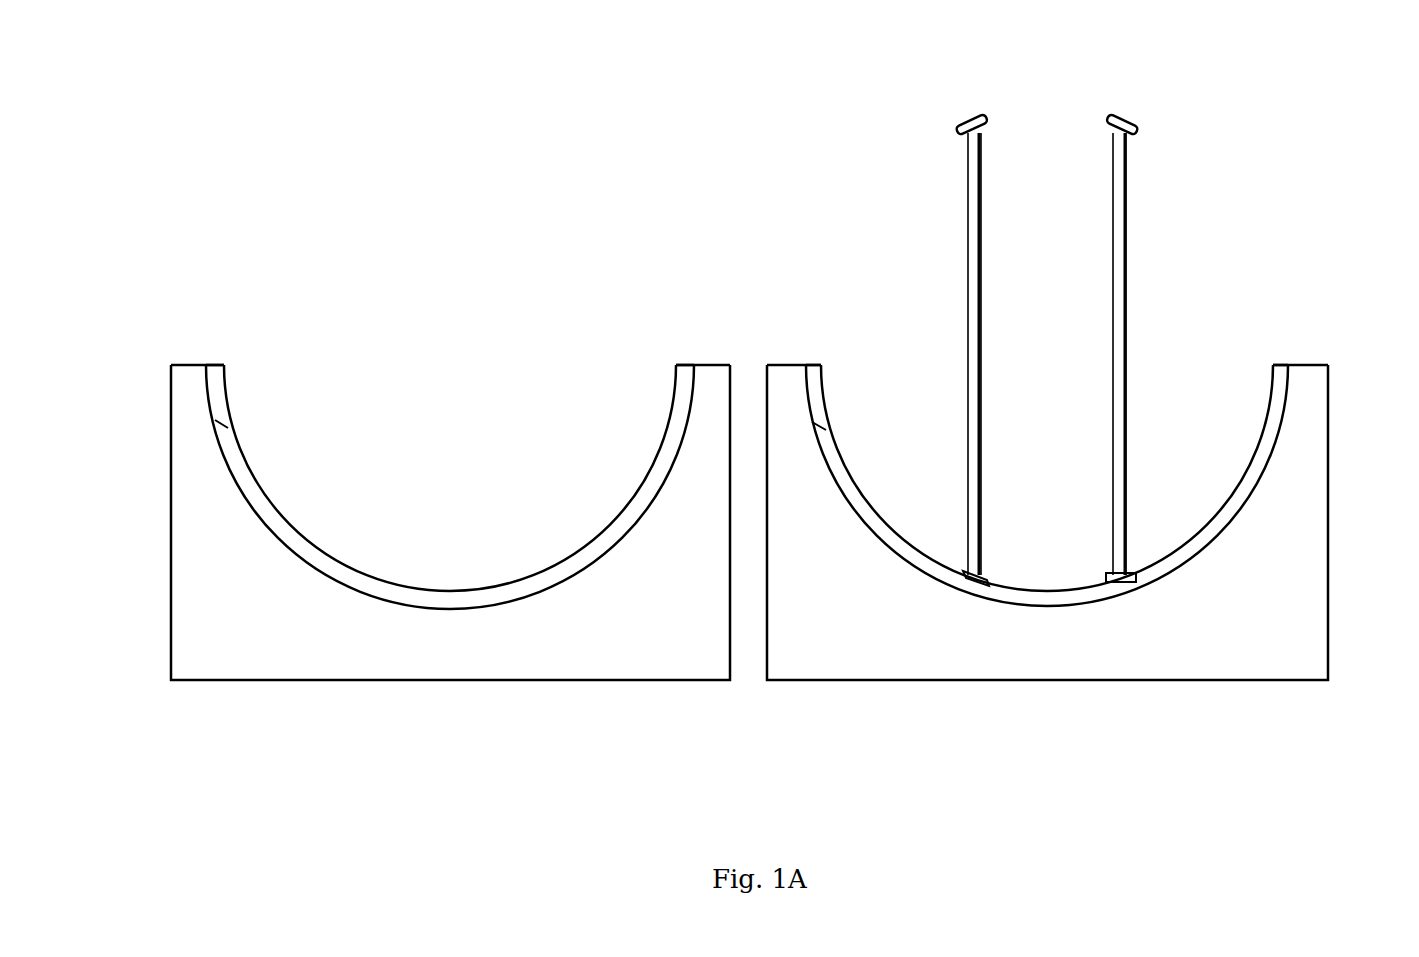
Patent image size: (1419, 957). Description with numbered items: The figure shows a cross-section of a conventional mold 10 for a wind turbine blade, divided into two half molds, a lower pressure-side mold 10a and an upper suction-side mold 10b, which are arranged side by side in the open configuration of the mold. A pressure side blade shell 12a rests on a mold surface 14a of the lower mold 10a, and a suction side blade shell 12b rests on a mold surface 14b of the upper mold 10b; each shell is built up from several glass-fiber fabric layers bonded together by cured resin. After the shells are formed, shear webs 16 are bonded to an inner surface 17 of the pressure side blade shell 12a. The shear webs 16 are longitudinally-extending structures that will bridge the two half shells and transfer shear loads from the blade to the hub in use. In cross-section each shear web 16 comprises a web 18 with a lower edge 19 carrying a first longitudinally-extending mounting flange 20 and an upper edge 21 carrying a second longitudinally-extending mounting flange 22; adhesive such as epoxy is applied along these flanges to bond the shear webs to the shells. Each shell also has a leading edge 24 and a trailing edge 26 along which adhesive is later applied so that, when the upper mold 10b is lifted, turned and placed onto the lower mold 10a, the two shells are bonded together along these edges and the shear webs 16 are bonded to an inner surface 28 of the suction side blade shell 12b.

The mold 10 is at (728, 203).
The lower pressure-side mold 10a is at (1318, 652).
The upper suction-side mold 10b is at (185, 652).
The pressure side blade shell 12a is at (1274, 421).
The suction side blade shell 12b is at (596, 554).
The mold surface 14a is at (820, 432).
The mold surface 14b is at (222, 432).
The shear web 16 is at (1108, 301).
The inner surface 17 is at (1233, 497).
The web 18 is at (968, 236).
The lower edge 19 is at (1109, 567).
The first longitudinally-extending mounting flange 20 is at (964, 572).
The upper edge 21 is at (1110, 108).
The second longitudinally-extending mounting flange 22 is at (962, 118).
The leading edge 24 is at (682, 366).
The trailing edge 26 is at (212, 366).
The inner surface 28 is at (326, 555).